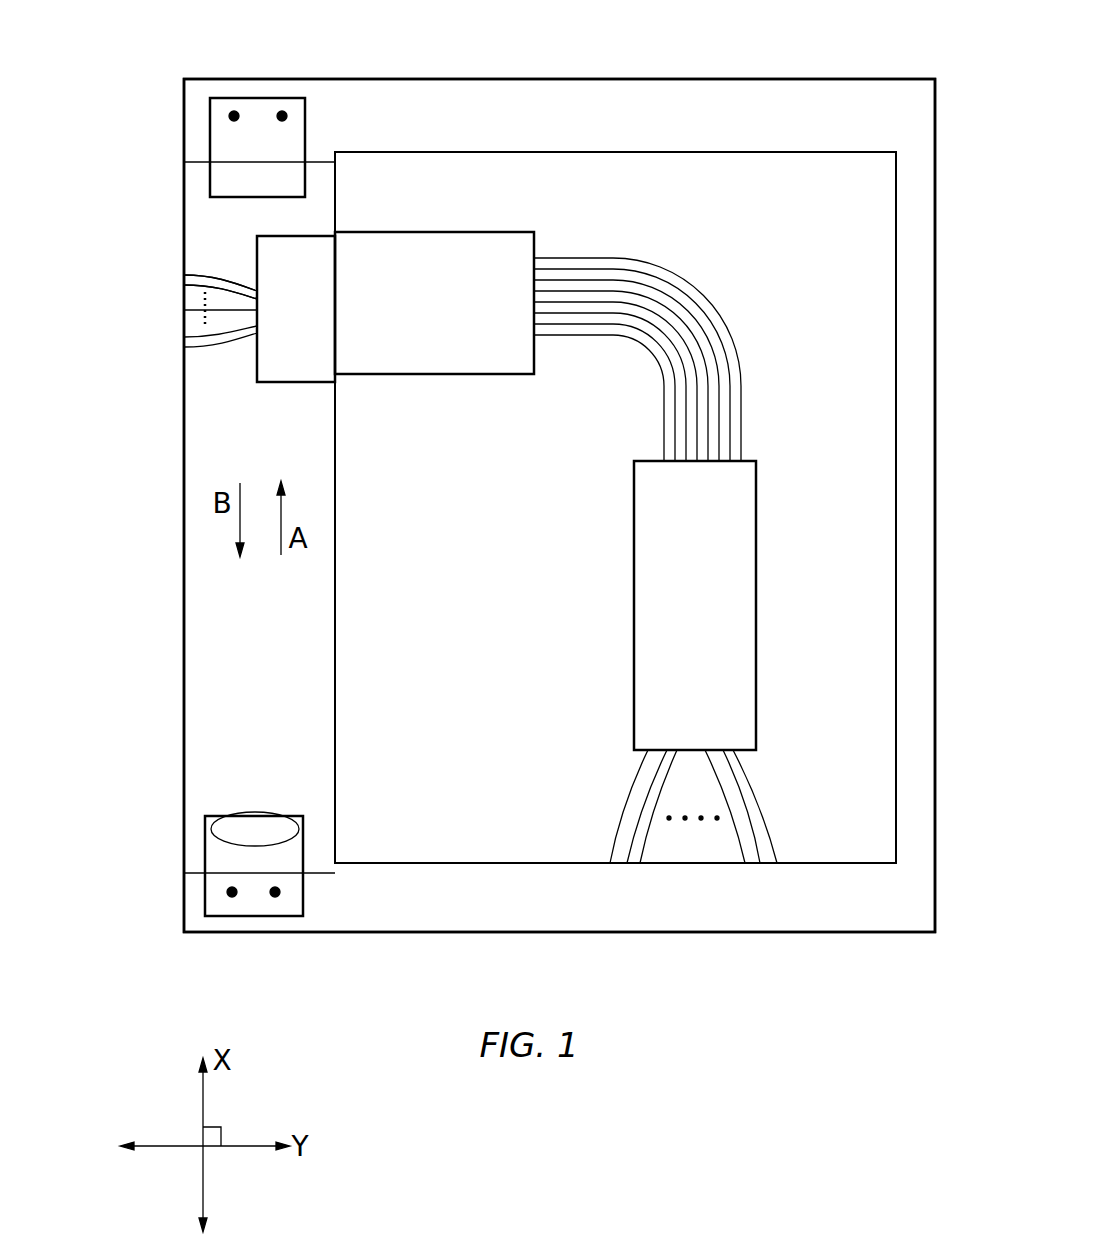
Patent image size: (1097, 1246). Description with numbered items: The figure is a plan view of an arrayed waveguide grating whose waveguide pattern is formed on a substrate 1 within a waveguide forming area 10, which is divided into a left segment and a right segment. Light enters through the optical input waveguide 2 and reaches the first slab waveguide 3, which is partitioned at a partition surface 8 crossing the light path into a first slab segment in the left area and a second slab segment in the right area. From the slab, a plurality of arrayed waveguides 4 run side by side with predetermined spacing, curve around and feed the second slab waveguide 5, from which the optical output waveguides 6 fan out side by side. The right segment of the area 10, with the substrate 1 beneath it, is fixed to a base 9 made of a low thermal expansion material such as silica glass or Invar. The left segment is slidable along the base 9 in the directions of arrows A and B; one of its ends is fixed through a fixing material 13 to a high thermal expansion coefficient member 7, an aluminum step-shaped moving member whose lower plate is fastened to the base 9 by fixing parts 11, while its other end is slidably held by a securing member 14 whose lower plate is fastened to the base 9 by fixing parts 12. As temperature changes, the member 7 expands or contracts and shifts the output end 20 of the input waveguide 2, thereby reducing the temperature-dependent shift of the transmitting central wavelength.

The substrate 1 is at (882, 517).
The optical input waveguide 2 is at (195, 310).
The first slab waveguide 3 is at (280, 370).
The arrayed waveguides 4 is at (712, 308).
The second slab waveguide 5 is at (736, 610).
The optical output waveguides 6 is at (628, 791).
The high thermal expansion coefficient member 7 is at (258, 908).
The partition surface 8 is at (333, 315).
The base 9 is at (858, 918).
The waveguide forming area 10 is at (190, 607).
The fixing parts 11 is at (282, 892).
The fixing parts 12 is at (234, 108).
The fixing material 13 is at (252, 818).
The securing member 14 is at (278, 160).
The output end 20 is at (253, 296).